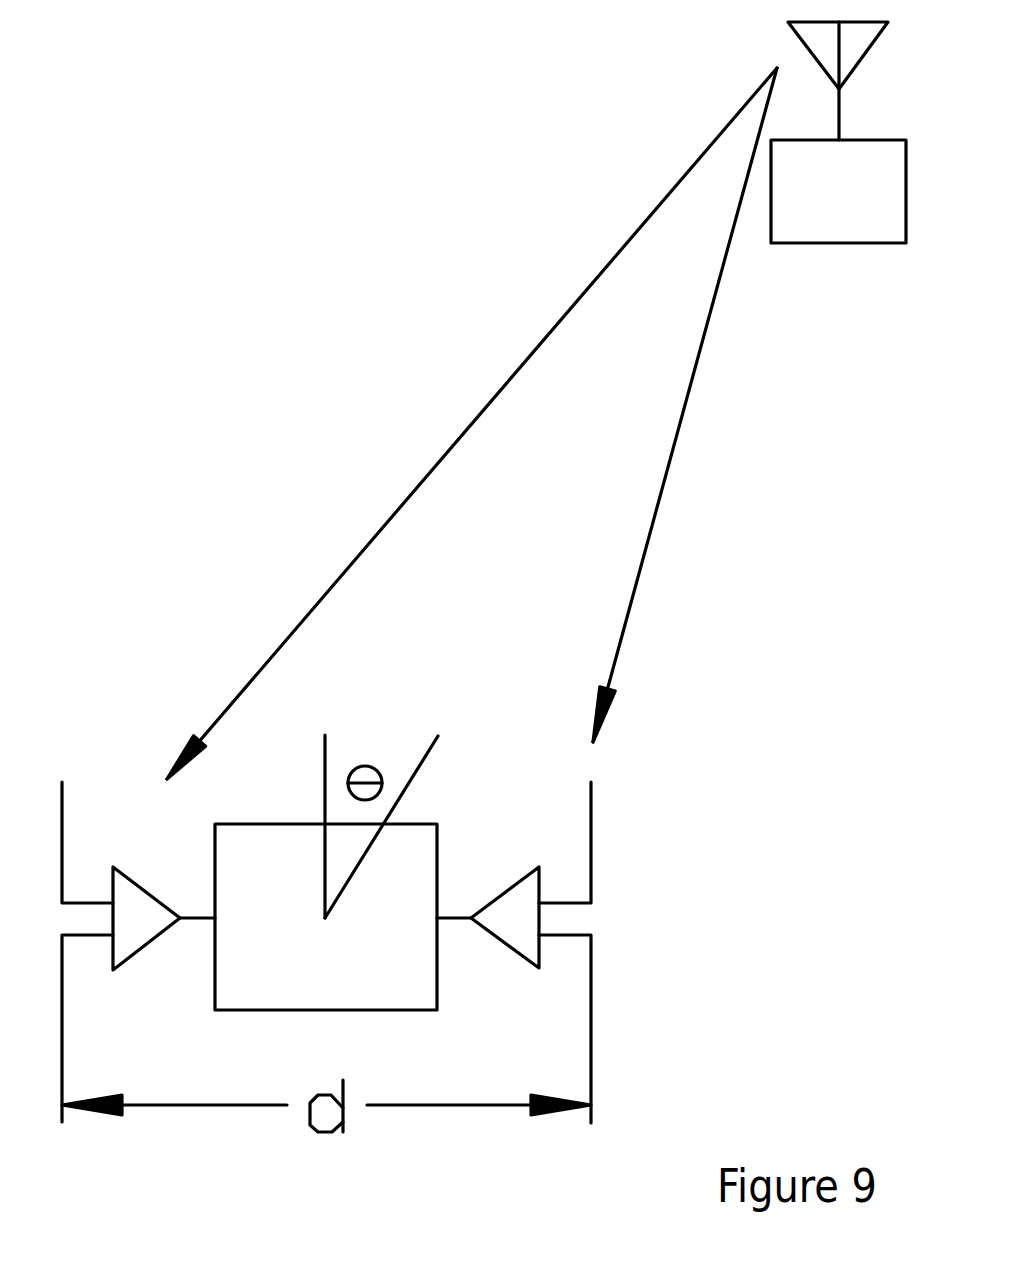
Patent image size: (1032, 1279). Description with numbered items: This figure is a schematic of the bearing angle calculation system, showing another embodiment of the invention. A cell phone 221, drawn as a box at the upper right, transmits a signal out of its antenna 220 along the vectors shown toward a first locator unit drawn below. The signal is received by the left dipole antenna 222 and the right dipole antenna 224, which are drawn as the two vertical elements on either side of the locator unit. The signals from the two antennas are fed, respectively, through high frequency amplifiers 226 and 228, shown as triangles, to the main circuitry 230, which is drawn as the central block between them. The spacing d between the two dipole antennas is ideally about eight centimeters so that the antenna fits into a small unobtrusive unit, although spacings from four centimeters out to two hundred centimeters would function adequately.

The antenna 220 is at (799, 73).
The cell phone 221 is at (838, 219).
The left dipole antenna 222 is at (76, 925).
The right dipole antenna 224 is at (607, 923).
The high frequency amplifier 226 is at (162, 887).
The high frequency amplifier 228 is at (490, 884).
The main circuitry 230 is at (326, 888).